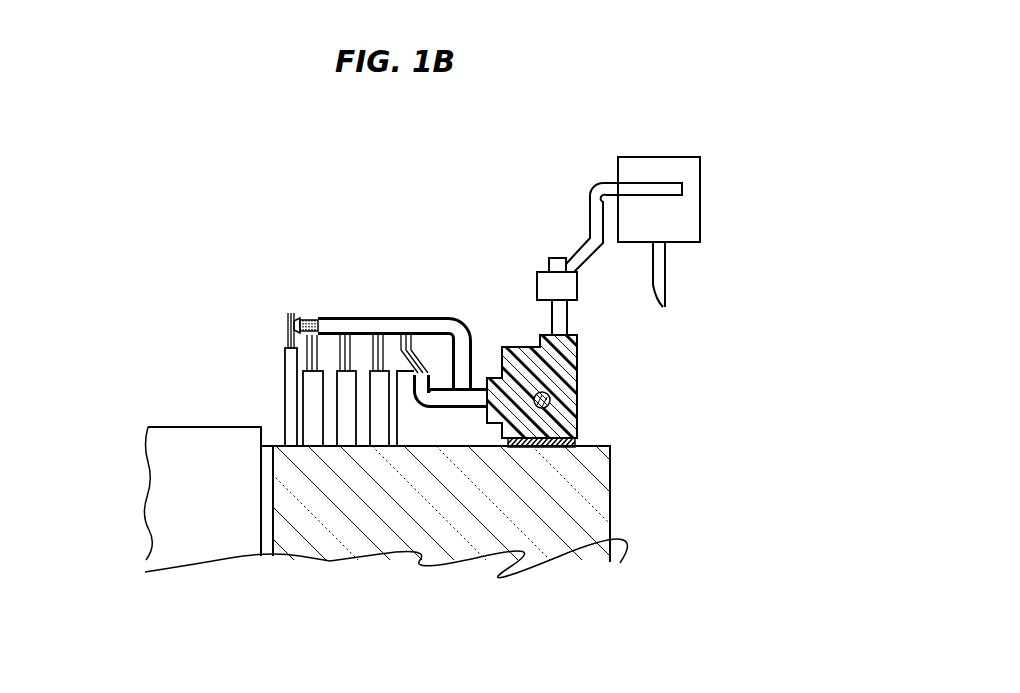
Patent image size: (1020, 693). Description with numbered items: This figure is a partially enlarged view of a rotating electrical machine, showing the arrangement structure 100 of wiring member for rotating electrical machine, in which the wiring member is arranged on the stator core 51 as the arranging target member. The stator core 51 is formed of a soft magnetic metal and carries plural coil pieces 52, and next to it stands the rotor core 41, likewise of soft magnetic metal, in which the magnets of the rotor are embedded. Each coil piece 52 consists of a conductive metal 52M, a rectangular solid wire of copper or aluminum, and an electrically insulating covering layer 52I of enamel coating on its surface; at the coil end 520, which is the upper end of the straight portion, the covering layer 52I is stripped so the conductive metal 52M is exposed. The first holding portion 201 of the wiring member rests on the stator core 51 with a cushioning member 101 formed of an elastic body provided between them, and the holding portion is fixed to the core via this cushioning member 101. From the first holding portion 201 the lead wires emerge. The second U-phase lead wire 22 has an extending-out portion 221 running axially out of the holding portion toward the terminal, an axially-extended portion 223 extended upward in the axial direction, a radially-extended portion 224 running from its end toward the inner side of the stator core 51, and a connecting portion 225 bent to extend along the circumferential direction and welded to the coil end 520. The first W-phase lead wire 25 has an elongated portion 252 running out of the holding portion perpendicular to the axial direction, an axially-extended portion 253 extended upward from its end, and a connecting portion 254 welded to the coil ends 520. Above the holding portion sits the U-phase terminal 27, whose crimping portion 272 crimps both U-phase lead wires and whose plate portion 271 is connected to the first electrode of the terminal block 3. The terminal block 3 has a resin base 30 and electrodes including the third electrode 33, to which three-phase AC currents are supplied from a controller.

The terminal block 3 is at (685, 201).
The base 30 is at (700, 215).
The third electrode 33 is at (665, 277).
The U-phase terminal 27 is at (610, 188).
The plate portion 271 is at (642, 182).
The crimping portion 272 is at (547, 283).
The extending-out portion 221 is at (560, 327).
The arrangement structure of wiring member 100 is at (554, 395).
The first holding portion 201 is at (568, 383).
The cushioning member 101 is at (575, 442).
The second U-phase lead wire 22 is at (419, 321).
The radially-extended portion 224 is at (368, 327).
The axially-extended portion 223 is at (460, 347).
The axially-extended portion 253 is at (425, 377).
The connecting portion 254 is at (409, 333).
The elongated portion 252 is at (472, 403).
The connecting portion 225 is at (298, 317).
The coil end 520 is at (293, 313).
The coil piece 52 is at (313, 423).
The covering layer 52I is at (286, 355).
The conductive metal 52M is at (287, 335).
The rotor core 41 is at (183, 427).
The stator core 51 is at (333, 547).
The first W-phase lead wire 25 is at (463, 423).